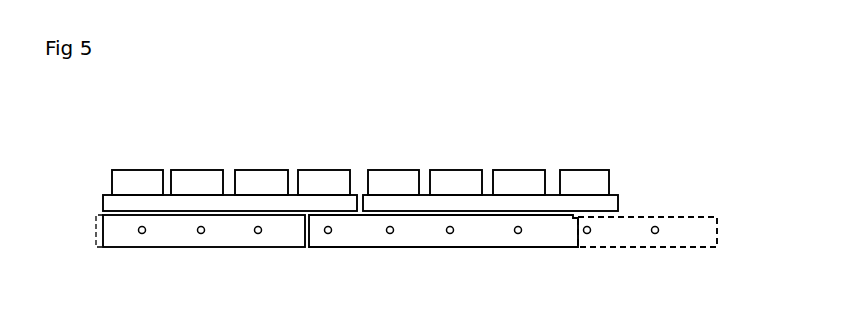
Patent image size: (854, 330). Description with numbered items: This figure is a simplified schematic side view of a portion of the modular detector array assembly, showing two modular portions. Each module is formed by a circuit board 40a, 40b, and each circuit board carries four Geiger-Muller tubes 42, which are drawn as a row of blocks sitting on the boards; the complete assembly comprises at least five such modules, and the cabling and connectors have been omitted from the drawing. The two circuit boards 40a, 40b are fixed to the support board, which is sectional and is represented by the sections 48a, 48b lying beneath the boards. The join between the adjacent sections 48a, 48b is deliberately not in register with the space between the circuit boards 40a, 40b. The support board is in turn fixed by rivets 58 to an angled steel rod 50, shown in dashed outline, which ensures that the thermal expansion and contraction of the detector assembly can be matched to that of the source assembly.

The Geiger-Muller tubes 42 is at (123, 176).
The circuit board 40a is at (117, 200).
The circuit board 40b is at (608, 202).
The section of the support board 48a is at (220, 237).
The section of the support board 48b is at (443, 253).
The angled steel rod 50 is at (702, 226).
The rivets 58 is at (391, 233).